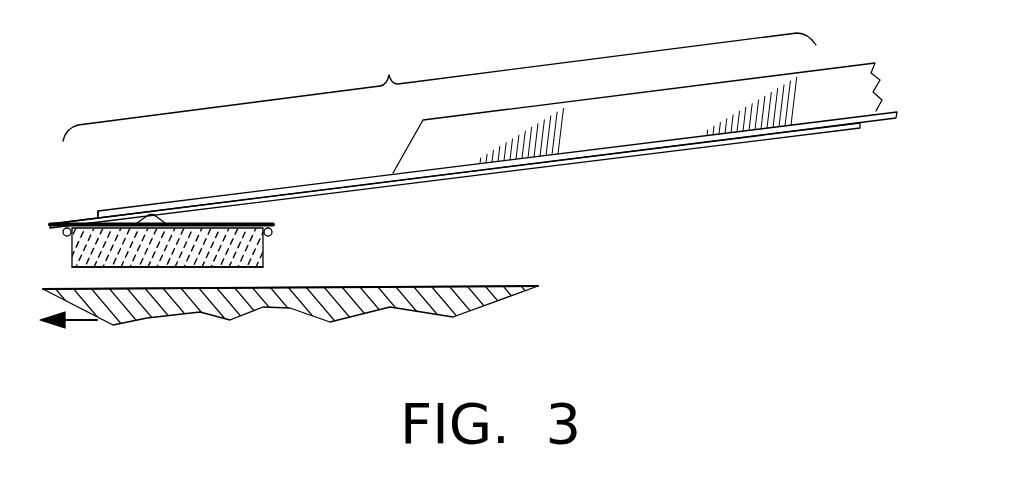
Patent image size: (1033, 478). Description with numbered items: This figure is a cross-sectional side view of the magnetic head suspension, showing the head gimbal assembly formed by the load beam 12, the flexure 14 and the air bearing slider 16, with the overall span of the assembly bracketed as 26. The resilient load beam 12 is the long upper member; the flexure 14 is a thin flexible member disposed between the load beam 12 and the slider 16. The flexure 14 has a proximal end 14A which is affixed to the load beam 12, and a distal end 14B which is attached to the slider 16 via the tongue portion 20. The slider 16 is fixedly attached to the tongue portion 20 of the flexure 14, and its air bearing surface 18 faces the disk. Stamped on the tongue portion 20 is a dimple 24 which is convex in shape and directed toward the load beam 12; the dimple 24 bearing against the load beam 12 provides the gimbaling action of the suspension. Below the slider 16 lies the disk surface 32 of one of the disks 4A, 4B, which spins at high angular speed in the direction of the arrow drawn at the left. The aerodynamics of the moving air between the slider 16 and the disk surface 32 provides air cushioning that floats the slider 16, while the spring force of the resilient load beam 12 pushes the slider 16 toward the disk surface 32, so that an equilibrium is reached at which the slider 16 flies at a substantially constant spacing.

The ribbon assembly 26 is at (439, 87).
The load beam 12 is at (412, 140).
The flexure 14 is at (443, 188).
The proximal end 14A is at (840, 133).
The distal end 14B is at (57, 223).
The dimple 24 is at (152, 214).
The tongue portion 20 is at (275, 224).
The air bearing slider 16 is at (262, 255).
The air bearing surface 18 is at (240, 268).
The disk surface 32 is at (473, 286).
The disk 4A is at (152, 305).
The disk 4B is at (152, 305).